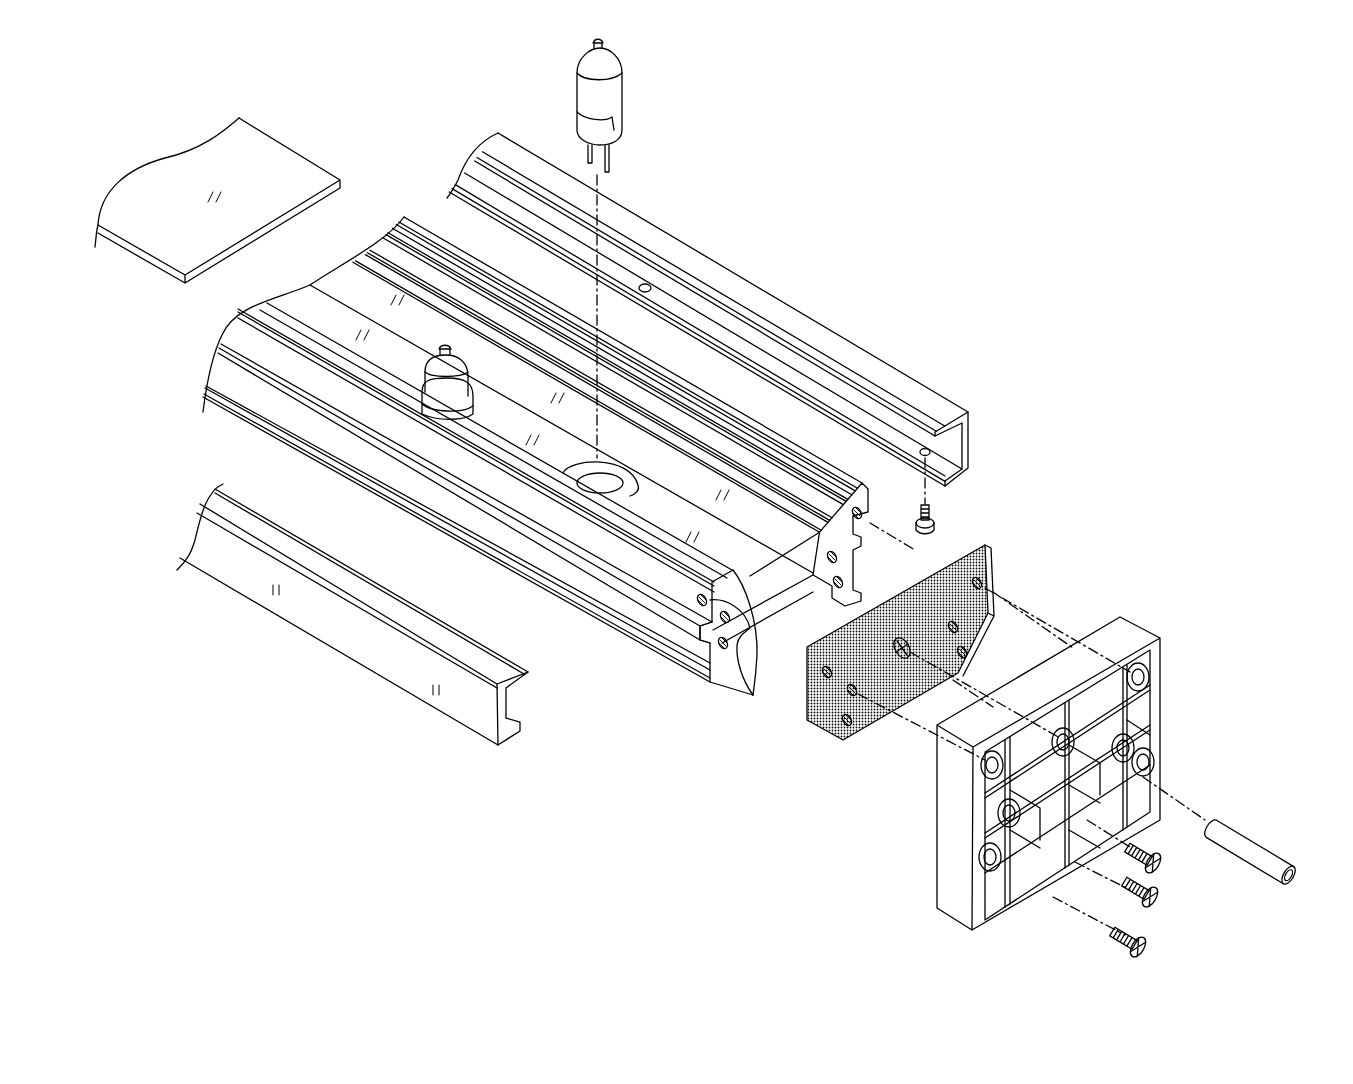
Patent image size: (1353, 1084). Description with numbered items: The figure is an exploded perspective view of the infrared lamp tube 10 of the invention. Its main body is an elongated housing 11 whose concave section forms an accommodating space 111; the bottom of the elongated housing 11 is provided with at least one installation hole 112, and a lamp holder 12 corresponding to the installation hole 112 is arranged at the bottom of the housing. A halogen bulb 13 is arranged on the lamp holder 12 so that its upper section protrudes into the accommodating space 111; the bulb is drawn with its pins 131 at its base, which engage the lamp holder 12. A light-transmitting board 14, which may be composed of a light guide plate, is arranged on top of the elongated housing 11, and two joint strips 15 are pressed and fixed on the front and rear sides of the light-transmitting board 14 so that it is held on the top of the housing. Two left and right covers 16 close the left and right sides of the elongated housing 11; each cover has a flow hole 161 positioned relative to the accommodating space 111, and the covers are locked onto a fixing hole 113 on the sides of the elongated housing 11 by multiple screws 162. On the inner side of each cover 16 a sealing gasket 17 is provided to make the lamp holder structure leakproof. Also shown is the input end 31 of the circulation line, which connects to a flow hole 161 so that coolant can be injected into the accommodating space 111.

The infrared lamp tube 10 is at (1051, 194).
The elongated housing 11 is at (597, 472).
The accommodating space 111 is at (730, 568).
The installation hole 112 is at (688, 570).
The fixing hole 113 is at (737, 649).
The lamp holder 12 is at (462, 368).
The halogen bulb 13 is at (545, 248).
The pins 131 is at (610, 163).
The light-transmitting board 14 is at (280, 157).
The joint strip 15 is at (382, 663).
The left and right covers 16 is at (1084, 752).
The flow hole 161 is at (1095, 735).
The screws 162 is at (1152, 945).
The sealing gasket 17 is at (997, 575).
The input end 31 is at (1258, 852).